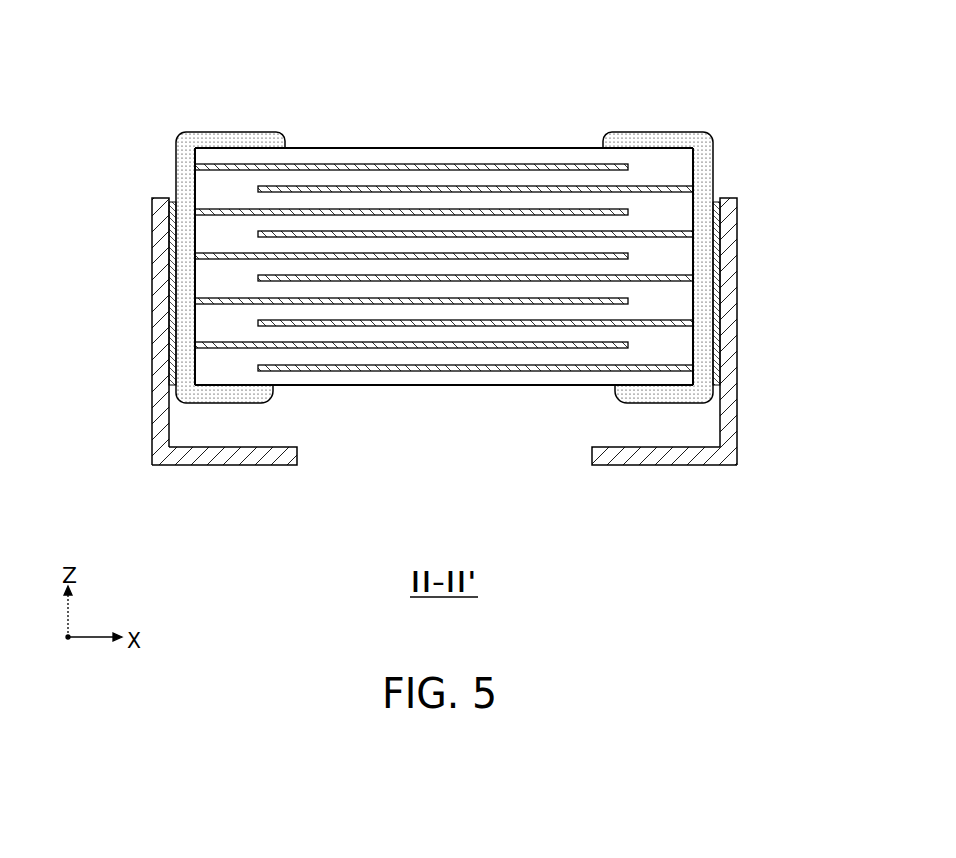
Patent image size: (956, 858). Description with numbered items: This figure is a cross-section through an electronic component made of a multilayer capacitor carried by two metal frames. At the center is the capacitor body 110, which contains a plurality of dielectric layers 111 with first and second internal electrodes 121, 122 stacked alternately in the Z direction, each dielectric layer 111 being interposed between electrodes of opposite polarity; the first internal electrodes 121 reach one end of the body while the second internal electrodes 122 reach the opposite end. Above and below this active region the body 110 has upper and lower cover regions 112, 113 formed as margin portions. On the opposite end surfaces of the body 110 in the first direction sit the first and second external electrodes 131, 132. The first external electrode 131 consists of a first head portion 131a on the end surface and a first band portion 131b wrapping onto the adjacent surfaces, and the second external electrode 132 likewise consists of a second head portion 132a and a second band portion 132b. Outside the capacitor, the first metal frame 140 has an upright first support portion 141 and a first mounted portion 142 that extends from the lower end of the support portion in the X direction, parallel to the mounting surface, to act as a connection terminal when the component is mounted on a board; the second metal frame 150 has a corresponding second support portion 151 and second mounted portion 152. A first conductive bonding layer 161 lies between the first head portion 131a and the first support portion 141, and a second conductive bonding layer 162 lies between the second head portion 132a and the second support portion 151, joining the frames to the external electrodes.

The body 110 is at (444, 266).
The dielectric layers 111 is at (507, 203).
The cover region 112 is at (382, 157).
The cover region 113 is at (472, 377).
The first internal electrode 121 is at (318, 166).
The second internal electrode 122 is at (567, 189).
The first external electrode 131 is at (203, 216).
The first head portion 131a is at (174, 177).
The first band portion 131b is at (225, 133).
The second external electrode 132 is at (685, 216).
The second head portion 132a is at (714, 177).
The second band portion 132b is at (663, 133).
The first metal frame 140 is at (201, 382).
The first support portion 141 is at (152, 415).
The first mounted portion 142 is at (195, 458).
The second metal frame 150 is at (689, 381).
The second support portion 151 is at (735, 412).
The second mounted portion 152 is at (664, 490).
The first conductive bonding layer 161 is at (172, 270).
The second conductive bonding layer 162 is at (715, 275).